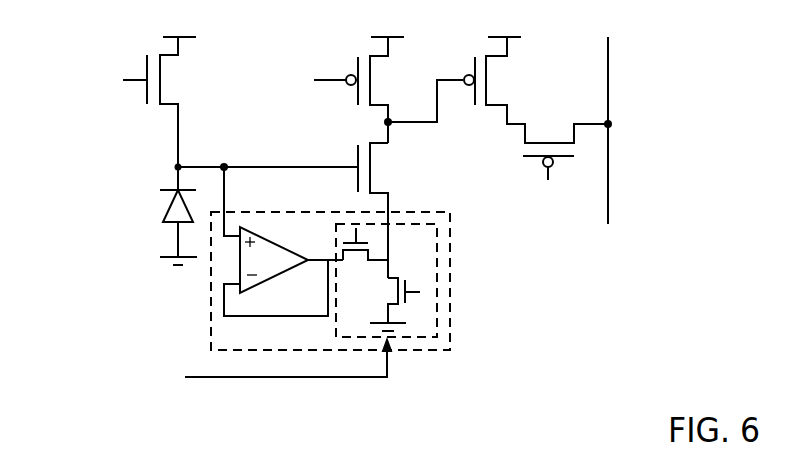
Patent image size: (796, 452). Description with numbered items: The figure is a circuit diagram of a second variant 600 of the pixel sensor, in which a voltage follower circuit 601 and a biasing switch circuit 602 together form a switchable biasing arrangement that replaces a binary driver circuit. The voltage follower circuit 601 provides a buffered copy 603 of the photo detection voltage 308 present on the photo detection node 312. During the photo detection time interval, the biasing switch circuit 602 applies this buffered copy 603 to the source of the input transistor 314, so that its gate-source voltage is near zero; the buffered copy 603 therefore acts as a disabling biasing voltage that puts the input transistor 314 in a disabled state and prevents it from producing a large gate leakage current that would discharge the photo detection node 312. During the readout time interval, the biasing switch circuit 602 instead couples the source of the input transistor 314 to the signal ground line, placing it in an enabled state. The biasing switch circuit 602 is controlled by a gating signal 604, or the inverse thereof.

The second variant of the pixel sensor 600 is at (61, 44).
The photo detection voltage 308 is at (267, 156).
The photo detection node 312 is at (178, 167).
The input transistor 314 is at (364, 194).
The voltage follower circuit 601 is at (268, 268).
The biasing switch circuit 602 is at (430, 240).
The buffered copy of the photo detection voltage 603 is at (344, 244).
The gating signal 604 is at (264, 362).